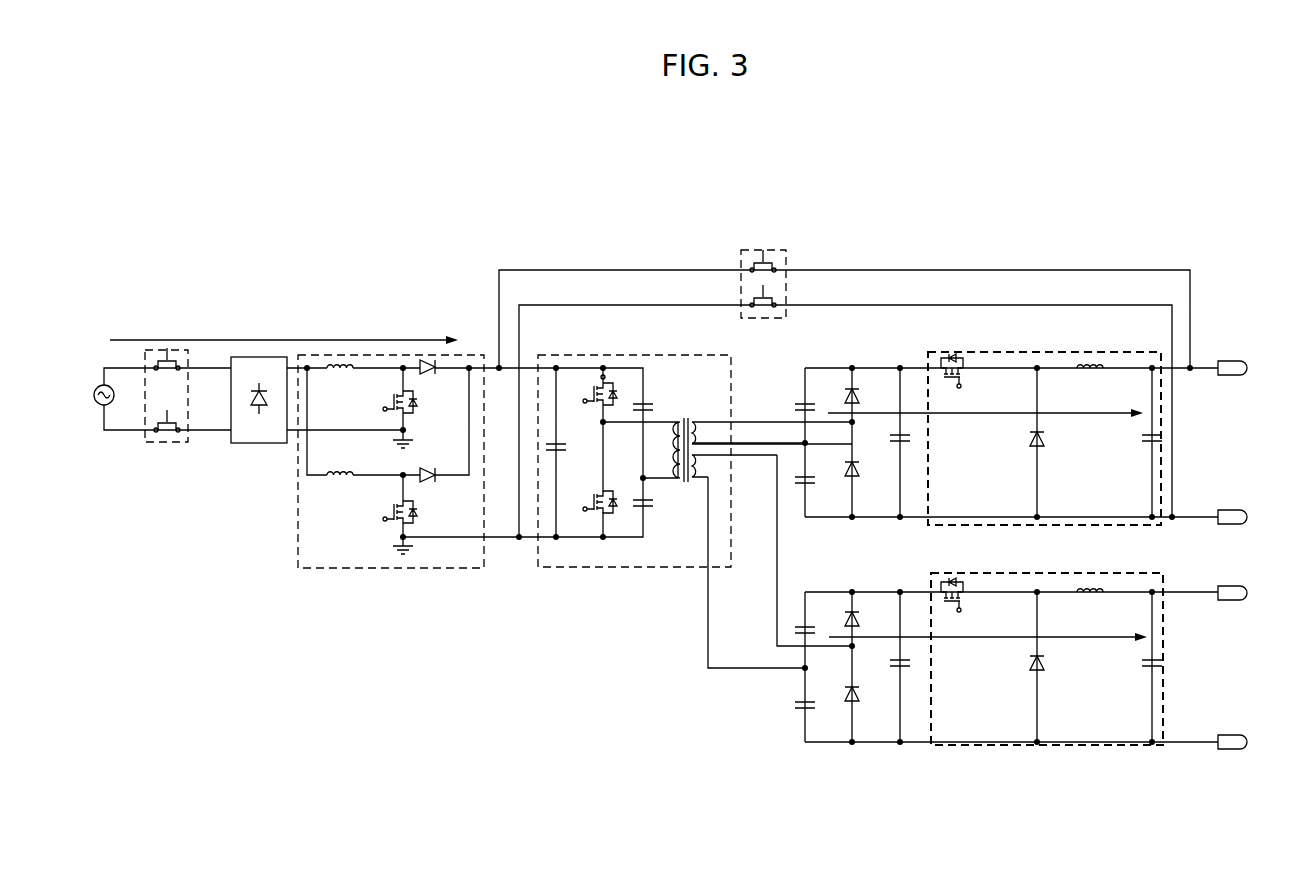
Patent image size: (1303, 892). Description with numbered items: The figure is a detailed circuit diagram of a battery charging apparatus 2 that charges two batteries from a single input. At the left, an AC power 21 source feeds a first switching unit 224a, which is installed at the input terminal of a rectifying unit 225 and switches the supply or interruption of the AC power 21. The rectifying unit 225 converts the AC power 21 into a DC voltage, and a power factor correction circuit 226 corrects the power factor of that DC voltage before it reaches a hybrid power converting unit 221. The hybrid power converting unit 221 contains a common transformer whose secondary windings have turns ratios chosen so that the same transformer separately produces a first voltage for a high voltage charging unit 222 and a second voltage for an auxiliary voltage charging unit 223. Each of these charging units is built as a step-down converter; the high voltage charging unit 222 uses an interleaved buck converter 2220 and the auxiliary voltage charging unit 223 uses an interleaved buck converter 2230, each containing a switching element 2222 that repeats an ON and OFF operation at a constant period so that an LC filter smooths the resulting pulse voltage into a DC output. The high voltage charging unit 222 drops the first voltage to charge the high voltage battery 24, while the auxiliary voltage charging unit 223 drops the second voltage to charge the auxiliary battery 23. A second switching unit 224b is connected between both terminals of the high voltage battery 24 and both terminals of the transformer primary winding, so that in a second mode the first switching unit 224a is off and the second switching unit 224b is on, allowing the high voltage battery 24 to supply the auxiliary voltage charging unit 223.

The battery charging apparatus 2 is at (250, 220).
The AC power 21 is at (104, 400).
The first switching unit 224a is at (167, 442).
The second switching unit 224b is at (770, 250).
The rectifying unit 225 is at (259, 443).
The power factor correction circuit 226 is at (390, 568).
The hybrid power converting unit 221 is at (612, 567).
The high voltage charging unit 222 is at (1006, 437).
The interleaved buck converter 2220 is at (1006, 443).
The switching element 2222 is at (932, 352).
The auxiliary voltage charging unit 223 is at (1006, 700).
The interleaved buck converter 2230 is at (935, 750).
The high voltage battery 24 is at (1260, 422).
The auxiliary battery 23 is at (1260, 650).